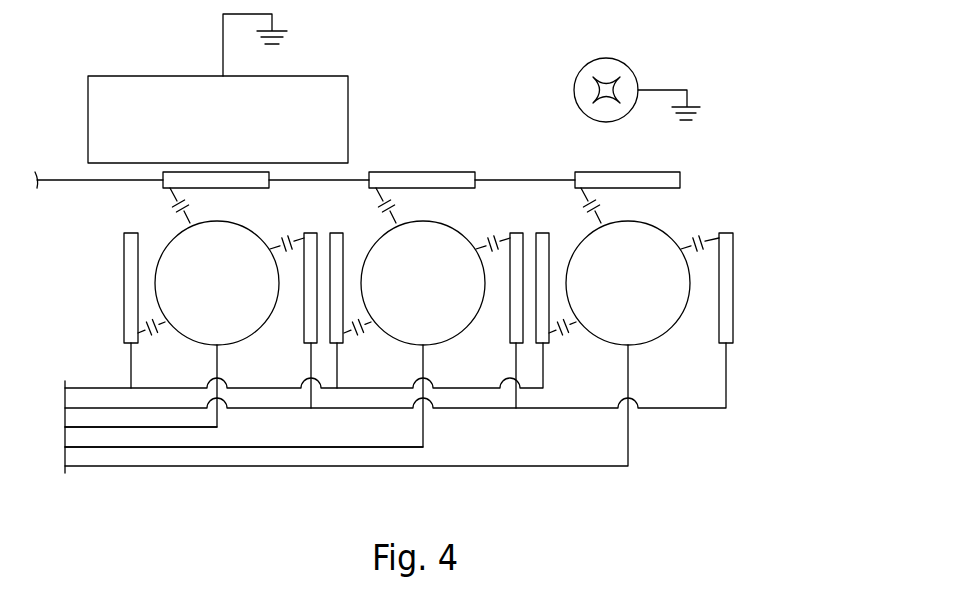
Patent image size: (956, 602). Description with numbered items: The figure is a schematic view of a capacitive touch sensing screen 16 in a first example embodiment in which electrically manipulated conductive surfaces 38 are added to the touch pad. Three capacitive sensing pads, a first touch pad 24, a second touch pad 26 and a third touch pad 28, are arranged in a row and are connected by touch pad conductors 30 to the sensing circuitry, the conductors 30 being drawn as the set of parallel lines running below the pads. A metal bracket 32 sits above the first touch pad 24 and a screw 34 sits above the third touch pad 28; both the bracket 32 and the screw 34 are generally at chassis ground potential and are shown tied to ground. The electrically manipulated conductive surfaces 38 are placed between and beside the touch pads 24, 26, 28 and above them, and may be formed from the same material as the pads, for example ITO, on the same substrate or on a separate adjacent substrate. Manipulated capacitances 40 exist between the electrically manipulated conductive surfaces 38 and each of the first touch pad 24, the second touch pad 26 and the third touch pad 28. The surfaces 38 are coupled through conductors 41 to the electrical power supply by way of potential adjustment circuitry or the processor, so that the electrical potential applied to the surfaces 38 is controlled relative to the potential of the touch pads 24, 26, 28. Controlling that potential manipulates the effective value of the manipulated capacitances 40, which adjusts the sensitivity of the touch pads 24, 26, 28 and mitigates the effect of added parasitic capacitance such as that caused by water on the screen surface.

The capacitive touch sensing screen 16 is at (762, 115).
The first touch pad 24 is at (203, 298).
The second touch pad 26 is at (409, 298).
The third touch pad 28 is at (614, 298).
The touch pad conductors 30 is at (167, 428).
The metal bracket 32 is at (348, 100).
The screw 34 is at (607, 56).
The electrically manipulated conductive surfaces 38 is at (163, 180).
The manipulated capacitances 40 is at (190, 220).
The conductors 41 is at (532, 178).